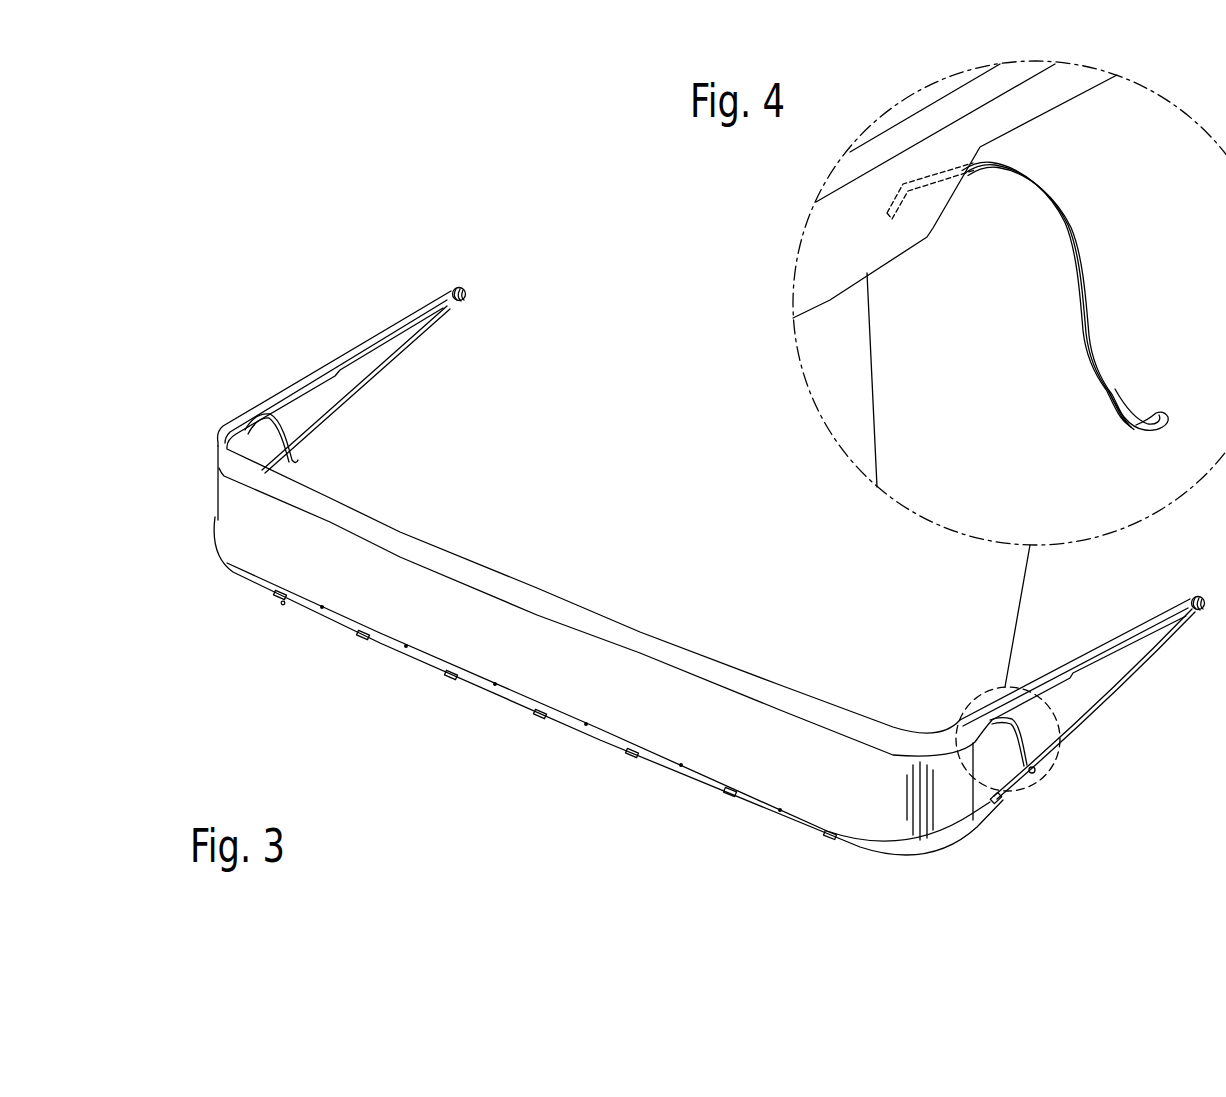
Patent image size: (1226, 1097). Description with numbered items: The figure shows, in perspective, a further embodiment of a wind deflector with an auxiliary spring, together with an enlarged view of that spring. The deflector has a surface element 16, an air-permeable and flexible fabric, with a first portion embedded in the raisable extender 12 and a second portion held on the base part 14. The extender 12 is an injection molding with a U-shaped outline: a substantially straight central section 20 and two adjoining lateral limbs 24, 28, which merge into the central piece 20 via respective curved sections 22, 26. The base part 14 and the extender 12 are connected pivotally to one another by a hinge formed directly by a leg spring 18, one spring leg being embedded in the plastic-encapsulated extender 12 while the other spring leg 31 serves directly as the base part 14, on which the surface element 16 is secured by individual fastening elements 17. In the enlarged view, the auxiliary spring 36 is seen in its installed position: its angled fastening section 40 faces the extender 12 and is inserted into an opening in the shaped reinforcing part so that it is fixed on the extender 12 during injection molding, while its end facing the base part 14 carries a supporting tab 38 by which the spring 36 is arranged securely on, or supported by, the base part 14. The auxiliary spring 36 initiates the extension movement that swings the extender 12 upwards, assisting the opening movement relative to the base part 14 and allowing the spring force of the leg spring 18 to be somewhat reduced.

In FIG. 3, the extender 12 is at (712, 650).
In FIG. 3, the base part 14 is at (612, 745).
In FIG. 3, the surface element 16 is at (775, 785).
In FIG. 3, the fastening elements 17 is at (362, 640).
In FIG. 3, the leg spring 18 is at (467, 296).
In FIG. 3, the central section 20 is at (536, 587).
In FIG. 3, the curved section 22 is at (950, 723).
In FIG. 3, the lateral limb 24 is at (1138, 637).
In FIG. 4, the lateral limb 24 is at (1072, 85).
In FIG. 3, the curved section 26 is at (218, 427).
In FIG. 3, the lateral limb 28 is at (353, 358).
In FIG. 3, the spring leg 31 is at (1108, 701).
In FIG. 3, the auxiliary spring 36 is at (280, 430).
In FIG. 4, the auxiliary spring 36 is at (1090, 297).
In FIG. 4, the supporting tab 38 is at (1160, 411).
In FIG. 4, the angled fastening section 40 is at (903, 205).